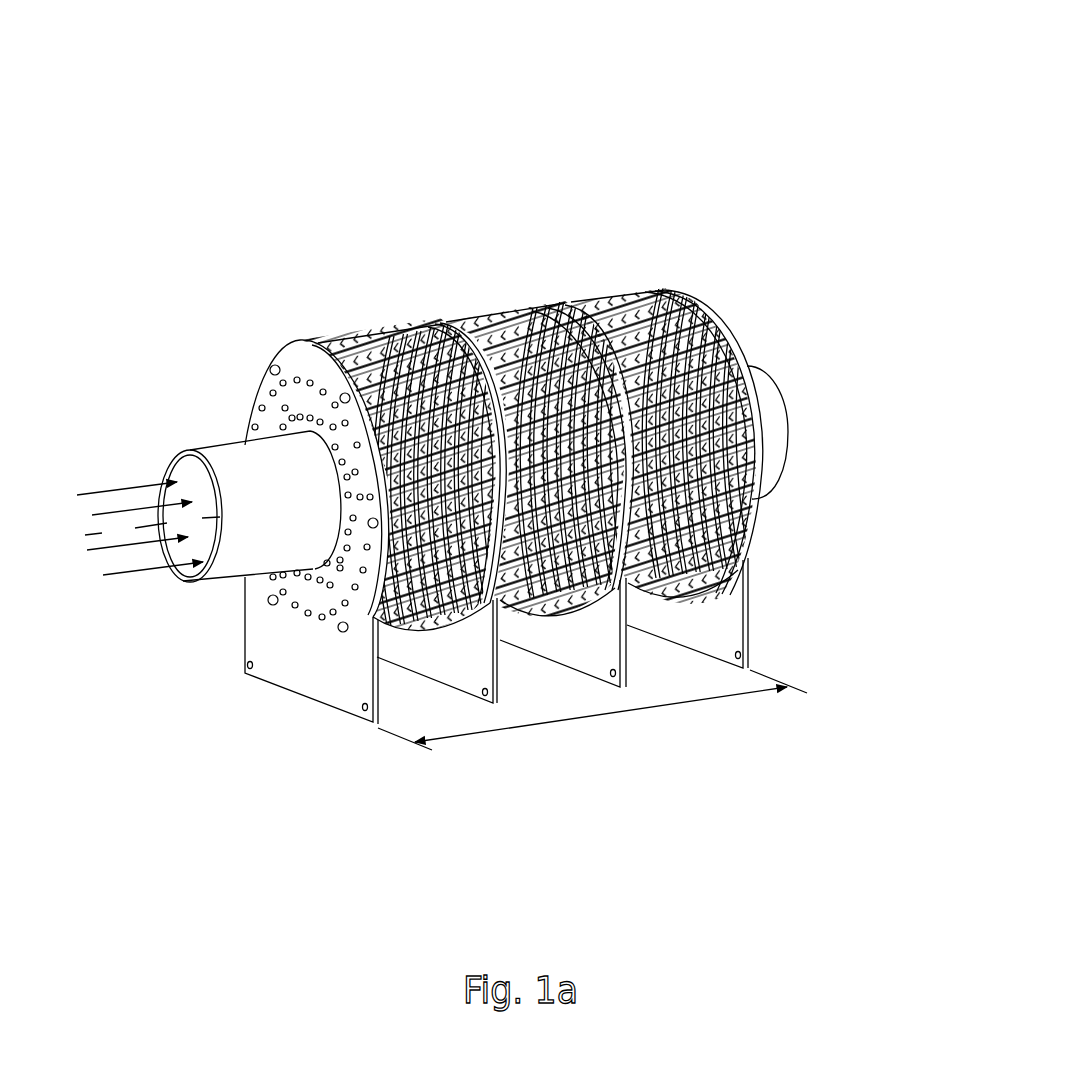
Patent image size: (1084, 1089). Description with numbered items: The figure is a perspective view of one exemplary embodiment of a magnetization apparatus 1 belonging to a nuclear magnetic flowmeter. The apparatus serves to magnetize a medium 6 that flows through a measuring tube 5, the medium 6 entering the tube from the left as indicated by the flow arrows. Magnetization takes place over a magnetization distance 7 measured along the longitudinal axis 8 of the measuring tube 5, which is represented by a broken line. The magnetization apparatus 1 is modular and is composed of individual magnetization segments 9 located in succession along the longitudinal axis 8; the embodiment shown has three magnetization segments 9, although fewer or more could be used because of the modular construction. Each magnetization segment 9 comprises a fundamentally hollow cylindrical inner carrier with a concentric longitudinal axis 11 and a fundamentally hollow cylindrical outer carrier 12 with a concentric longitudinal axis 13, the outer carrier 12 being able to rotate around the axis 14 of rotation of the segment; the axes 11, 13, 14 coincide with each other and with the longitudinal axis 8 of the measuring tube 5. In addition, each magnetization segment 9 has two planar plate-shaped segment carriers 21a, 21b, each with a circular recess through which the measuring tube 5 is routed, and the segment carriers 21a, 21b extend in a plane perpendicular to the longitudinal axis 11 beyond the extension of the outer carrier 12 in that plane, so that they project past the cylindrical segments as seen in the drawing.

The magnetization apparatus 1 is at (673, 193).
The measuring tube 5 is at (231, 454).
The medium 6 is at (70, 483).
The magnetization distance 7 is at (592, 710).
The longitudinal axis 8 is at (815, 450).
The magnetization segment 9 is at (343, 320).
The longitudinal axis of the inner carrier 11 is at (815, 450).
The outer carrier 12 is at (420, 635).
The longitudinal axis of the outer carrier 13 is at (815, 450).
The axis of rotation 14 is at (860, 416).
The segment carrier 21a is at (257, 382).
The segment carrier 21b is at (400, 330).